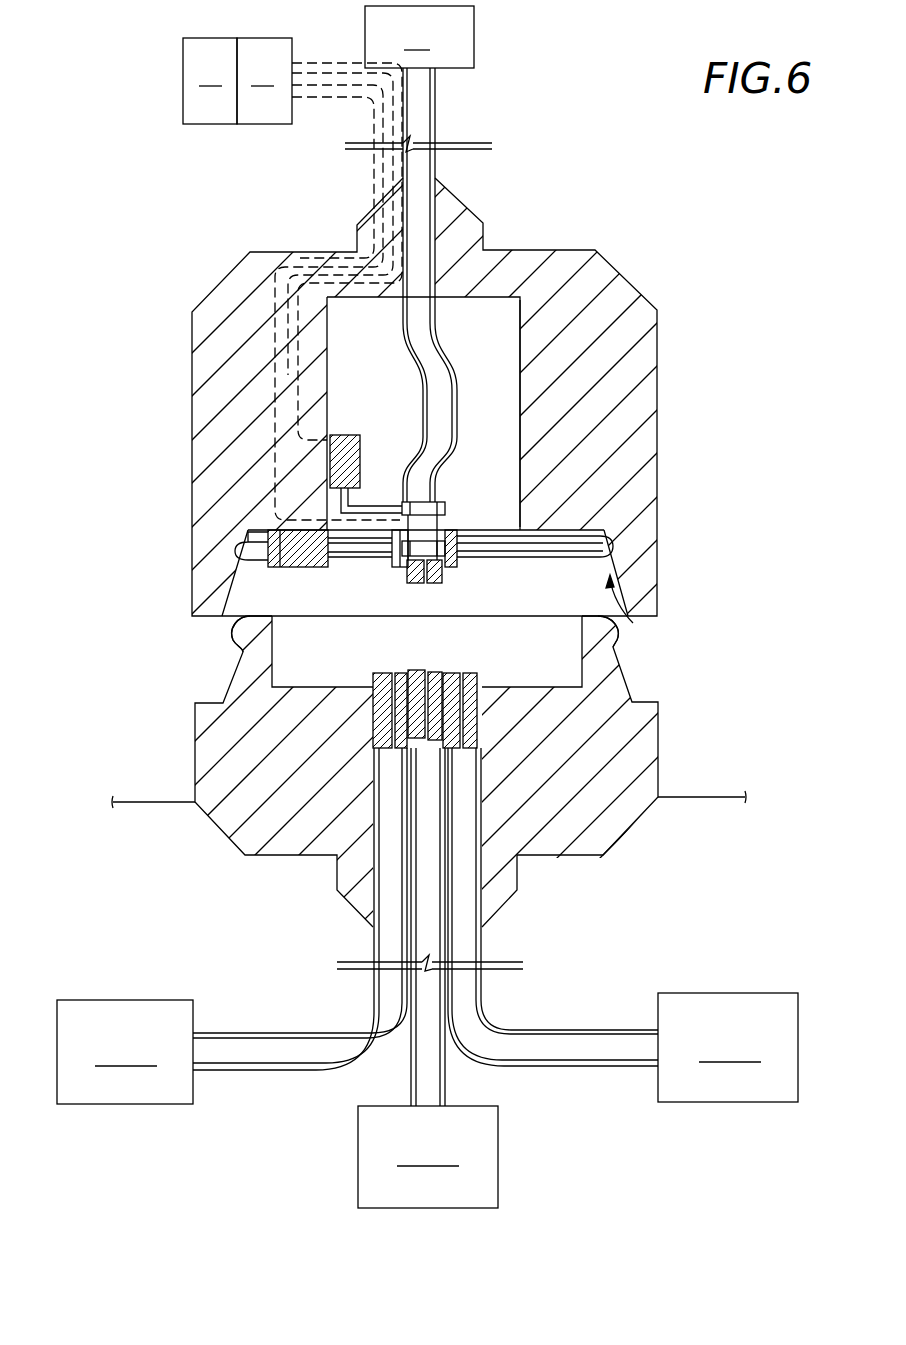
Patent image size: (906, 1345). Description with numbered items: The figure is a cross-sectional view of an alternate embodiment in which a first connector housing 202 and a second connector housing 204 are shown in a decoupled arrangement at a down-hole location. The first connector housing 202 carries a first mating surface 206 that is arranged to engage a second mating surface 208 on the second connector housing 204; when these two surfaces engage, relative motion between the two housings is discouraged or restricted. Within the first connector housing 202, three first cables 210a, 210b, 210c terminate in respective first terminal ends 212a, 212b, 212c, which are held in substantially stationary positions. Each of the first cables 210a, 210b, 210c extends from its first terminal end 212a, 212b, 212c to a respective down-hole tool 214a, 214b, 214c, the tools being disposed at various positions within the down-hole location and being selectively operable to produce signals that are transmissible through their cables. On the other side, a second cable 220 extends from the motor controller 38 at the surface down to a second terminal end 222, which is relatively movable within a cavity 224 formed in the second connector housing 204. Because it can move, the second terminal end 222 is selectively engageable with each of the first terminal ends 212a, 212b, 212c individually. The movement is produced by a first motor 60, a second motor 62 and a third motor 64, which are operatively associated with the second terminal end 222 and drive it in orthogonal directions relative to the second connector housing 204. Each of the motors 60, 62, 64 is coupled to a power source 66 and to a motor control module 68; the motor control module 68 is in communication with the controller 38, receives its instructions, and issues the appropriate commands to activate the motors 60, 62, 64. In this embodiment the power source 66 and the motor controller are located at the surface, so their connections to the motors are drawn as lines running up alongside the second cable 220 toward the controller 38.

The controller 38 is at (419, 37).
The power source 66 is at (292, 239).
The motor control module 68 is at (318, 279).
The second cable 220 is at (423, 204).
The cavity 224 is at (496, 327).
The second connector housing 204 is at (651, 309).
The third motor 64 is at (352, 435).
The first motor 60 is at (277, 568).
The second motor 62 is at (458, 552).
The second terminal end 222 is at (422, 585).
The second mating surface 208 is at (640, 621).
The first mating surface 206 is at (627, 676).
The first connector housing 202 is at (661, 737).
The first terminal end 212a is at (465, 673).
The first terminal end 212b is at (427, 671).
The first terminal end 212c is at (385, 673).
The first cable 210a is at (578, 1030).
The first cable 210b is at (447, 1077).
The first cable 210c is at (272, 1033).
The down-hole tool 214a is at (728, 1047).
The down-hole tool 214b is at (428, 1157).
The down-hole tool 214c is at (125, 1052).